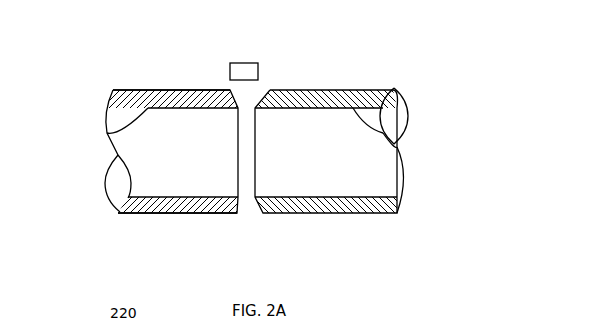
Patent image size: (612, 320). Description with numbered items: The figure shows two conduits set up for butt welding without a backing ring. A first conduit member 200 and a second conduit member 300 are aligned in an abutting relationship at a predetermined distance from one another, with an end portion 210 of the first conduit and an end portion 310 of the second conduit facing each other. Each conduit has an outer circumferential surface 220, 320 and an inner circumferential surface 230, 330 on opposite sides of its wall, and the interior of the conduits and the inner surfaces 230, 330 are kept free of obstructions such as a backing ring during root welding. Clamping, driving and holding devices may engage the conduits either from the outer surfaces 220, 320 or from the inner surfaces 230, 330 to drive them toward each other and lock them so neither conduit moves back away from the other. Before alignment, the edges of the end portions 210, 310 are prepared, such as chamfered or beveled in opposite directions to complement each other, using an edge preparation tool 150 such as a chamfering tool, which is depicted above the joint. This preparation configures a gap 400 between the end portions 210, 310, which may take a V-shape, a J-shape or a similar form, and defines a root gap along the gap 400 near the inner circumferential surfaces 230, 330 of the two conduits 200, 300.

The edge preparation tool 150 is at (245, 63).
The first conduit member 200 is at (128, 89).
The end portion 210 is at (225, 215).
The outer circumferential surface 220 is at (172, 90).
The inner circumferential surface 230 is at (107, 133).
The second conduit member 300 is at (360, 90).
The end portion 310 is at (262, 215).
The outer circumferential surface 320 is at (326, 90).
The inner circumferential surface 330 is at (400, 133).
The gap 400 is at (238, 215).